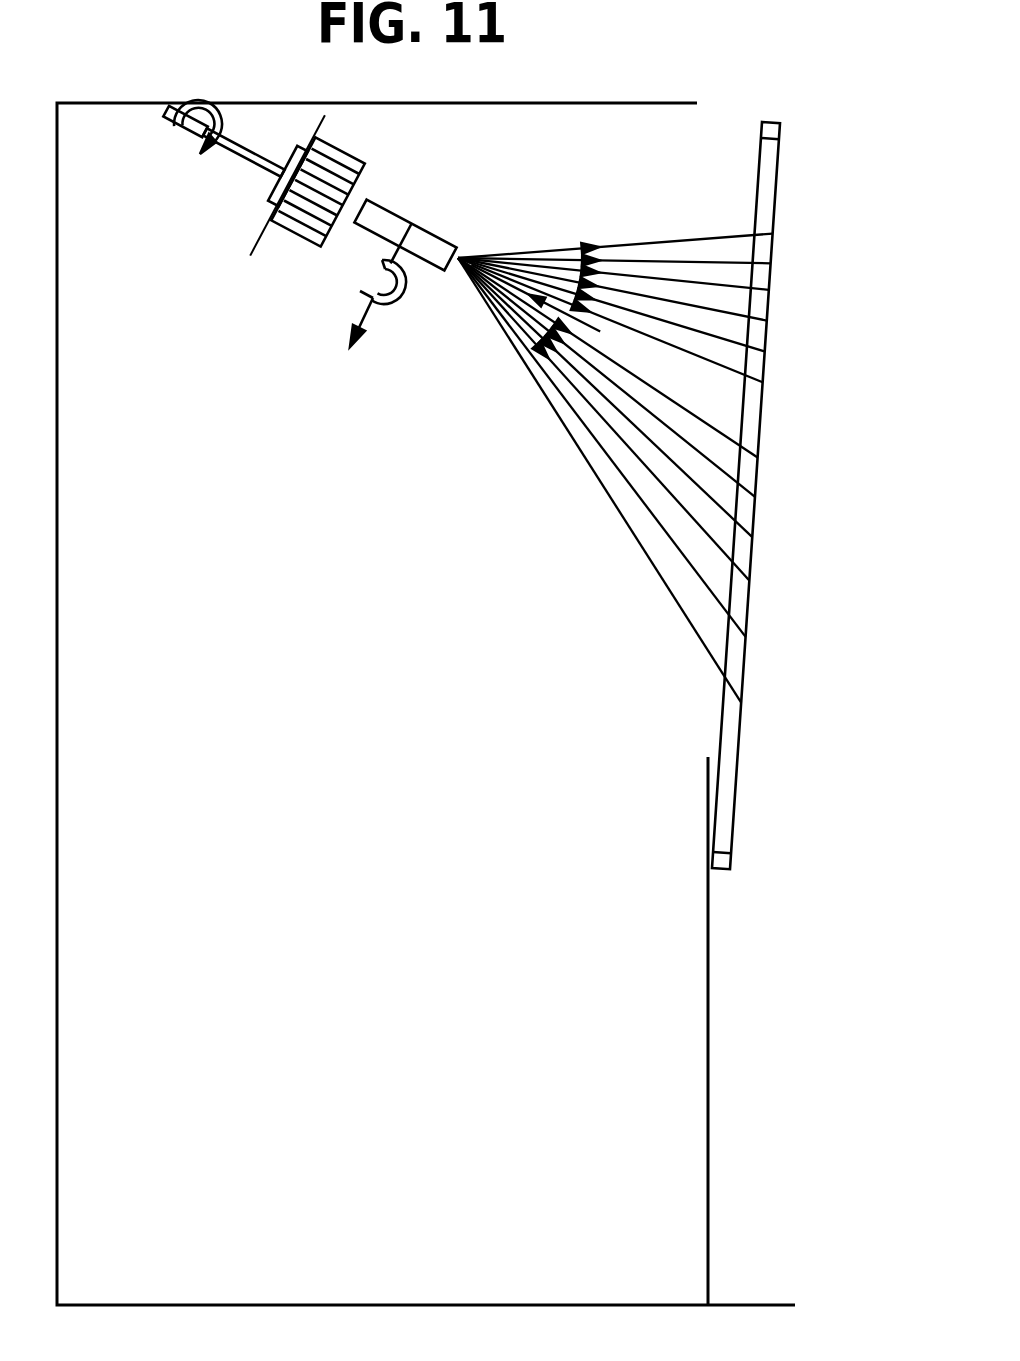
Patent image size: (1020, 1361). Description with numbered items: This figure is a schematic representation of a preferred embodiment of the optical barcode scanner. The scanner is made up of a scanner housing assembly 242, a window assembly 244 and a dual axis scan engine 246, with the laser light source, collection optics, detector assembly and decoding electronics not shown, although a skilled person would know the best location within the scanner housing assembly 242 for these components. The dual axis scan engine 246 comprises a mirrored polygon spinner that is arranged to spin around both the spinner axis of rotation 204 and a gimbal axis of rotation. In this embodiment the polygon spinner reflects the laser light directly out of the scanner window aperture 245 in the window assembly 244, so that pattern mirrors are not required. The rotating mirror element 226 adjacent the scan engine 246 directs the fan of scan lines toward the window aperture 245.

The scanner housing assembly 242 is at (82, 526).
The window assembly 244 is at (725, 1075).
The scanner window aperture 245 is at (796, 168).
The scanning mirror 226 is at (452, 212).
The spinner axis of rotation 204 is at (364, 322).
The dual axis scan engine 246 is at (295, 260).